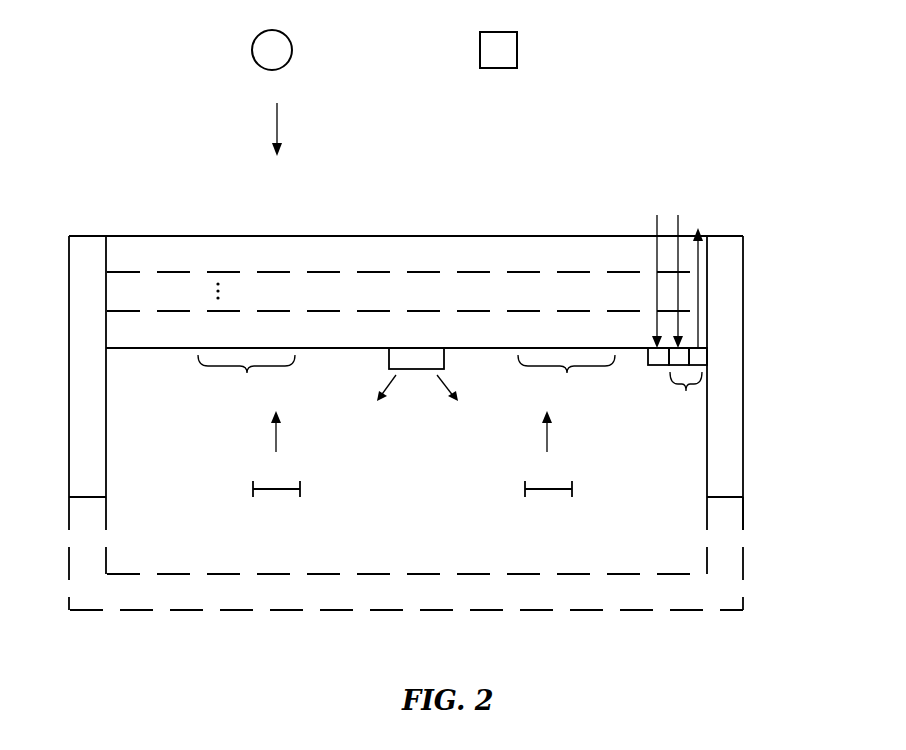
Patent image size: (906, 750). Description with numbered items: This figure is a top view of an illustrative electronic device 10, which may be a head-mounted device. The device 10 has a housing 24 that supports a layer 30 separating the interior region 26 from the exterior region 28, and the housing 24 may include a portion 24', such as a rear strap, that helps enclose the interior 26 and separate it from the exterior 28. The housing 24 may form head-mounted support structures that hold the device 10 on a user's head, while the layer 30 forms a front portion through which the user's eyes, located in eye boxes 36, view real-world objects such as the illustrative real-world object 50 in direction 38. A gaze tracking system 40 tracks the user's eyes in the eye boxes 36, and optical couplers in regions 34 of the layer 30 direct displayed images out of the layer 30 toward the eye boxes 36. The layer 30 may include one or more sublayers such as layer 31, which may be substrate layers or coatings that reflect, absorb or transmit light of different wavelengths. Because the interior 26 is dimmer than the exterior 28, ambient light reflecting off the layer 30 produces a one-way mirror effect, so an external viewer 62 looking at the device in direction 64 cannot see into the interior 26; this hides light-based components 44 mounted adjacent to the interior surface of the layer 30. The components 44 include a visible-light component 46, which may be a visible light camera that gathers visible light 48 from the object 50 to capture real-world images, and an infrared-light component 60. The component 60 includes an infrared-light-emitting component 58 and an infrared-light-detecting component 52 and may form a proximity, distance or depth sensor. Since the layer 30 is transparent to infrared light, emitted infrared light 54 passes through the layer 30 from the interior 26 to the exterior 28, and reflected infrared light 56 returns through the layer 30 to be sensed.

The electronic device 10 is at (717, 175).
The housing 24 is at (409, 383).
The housing portion 24' is at (406, 585).
The interior region 26 is at (122, 392).
The exterior region 28 is at (100, 183).
The layer 30 is at (503, 241).
The sublayer 31 is at (121, 322).
The regions 34 is at (406, 379).
The eye boxes 36 is at (276, 491).
The direction 38 is at (278, 441).
The gaze tracking system 40 is at (389, 360).
The light-based components 44 is at (622, 398).
The visible-light component 46 is at (658, 368).
The visible light 48 is at (655, 224).
The real-world object 50 is at (518, 50).
The infrared-light-detecting component 52 is at (703, 362).
The infrared light 54 is at (704, 233).
The infrared light 56 is at (682, 222).
The infrared-light-emitting component 58 is at (705, 353).
The infrared-light component 60 is at (688, 384).
The external viewer 62 is at (293, 50).
The direction 64 is at (279, 129).